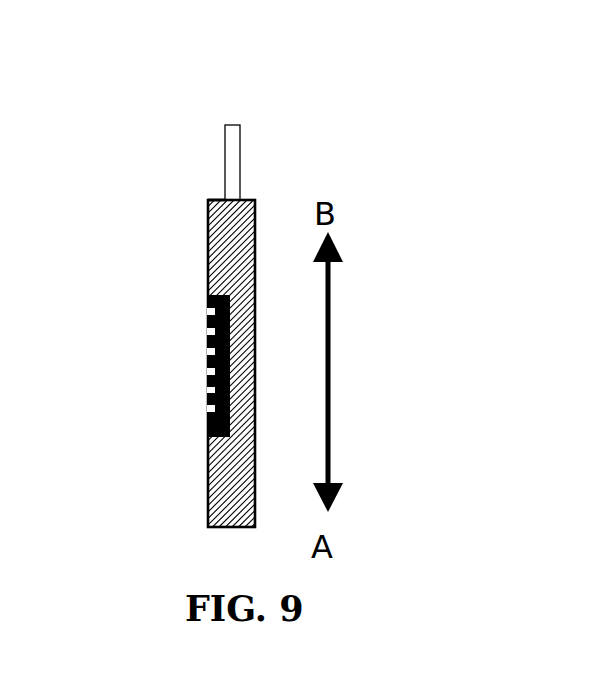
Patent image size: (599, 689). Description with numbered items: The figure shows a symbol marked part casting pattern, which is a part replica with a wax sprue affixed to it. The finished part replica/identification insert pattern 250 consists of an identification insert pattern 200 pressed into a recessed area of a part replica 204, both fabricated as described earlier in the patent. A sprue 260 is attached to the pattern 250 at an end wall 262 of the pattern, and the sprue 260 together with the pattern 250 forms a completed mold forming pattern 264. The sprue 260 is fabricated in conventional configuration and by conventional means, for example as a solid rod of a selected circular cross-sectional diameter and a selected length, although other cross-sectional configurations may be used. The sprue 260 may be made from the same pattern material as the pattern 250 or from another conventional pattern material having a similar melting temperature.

The identification insert pattern 200 is at (208, 295).
The part replica 204 is at (213, 488).
The finished part replica/identification insert pattern 250 is at (188, 402).
The sprue 260 is at (233, 145).
The end wall 262 is at (215, 188).
The completed mold forming pattern 264 is at (262, 156).